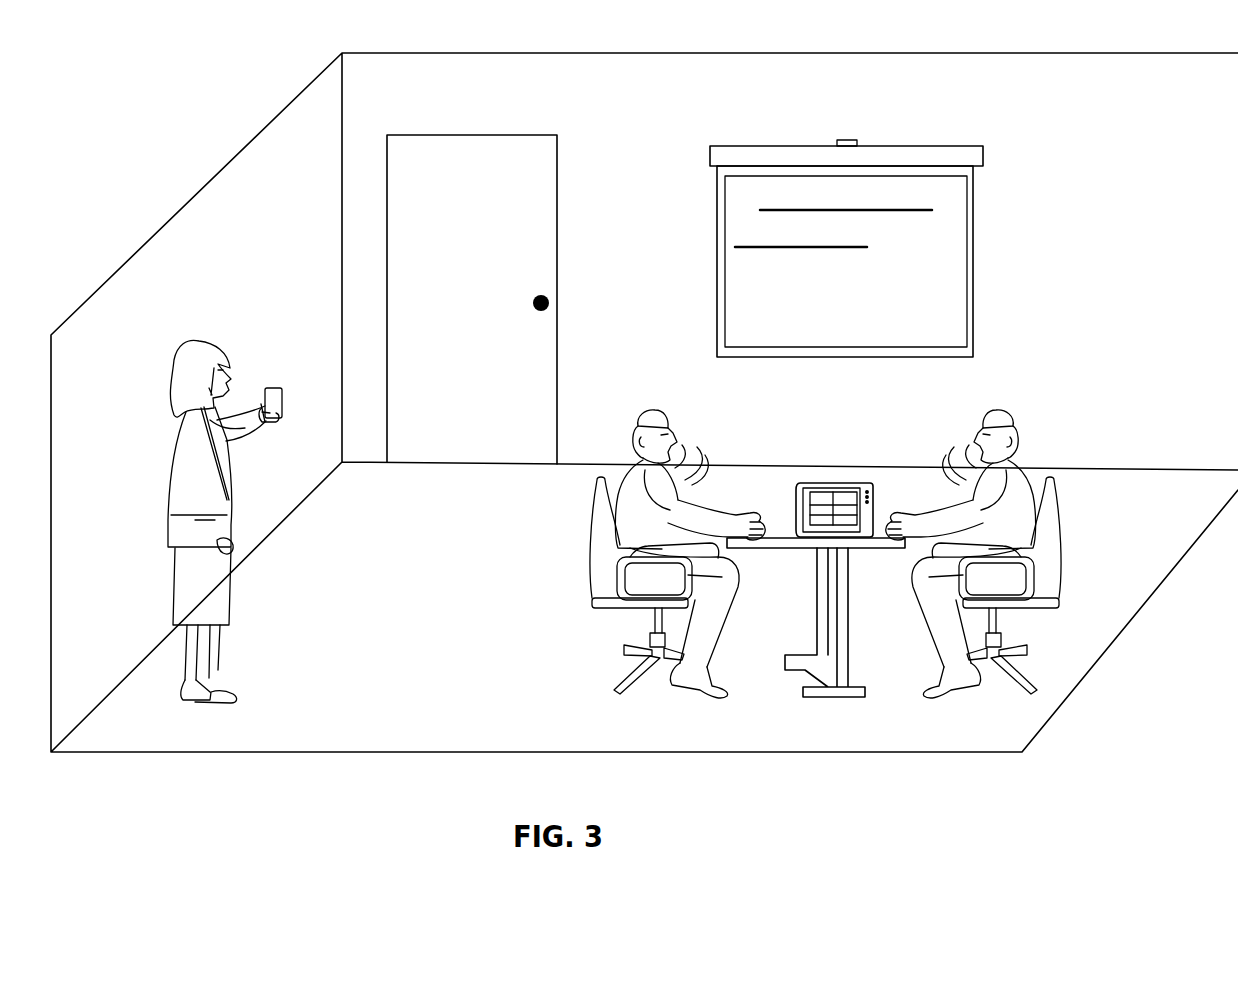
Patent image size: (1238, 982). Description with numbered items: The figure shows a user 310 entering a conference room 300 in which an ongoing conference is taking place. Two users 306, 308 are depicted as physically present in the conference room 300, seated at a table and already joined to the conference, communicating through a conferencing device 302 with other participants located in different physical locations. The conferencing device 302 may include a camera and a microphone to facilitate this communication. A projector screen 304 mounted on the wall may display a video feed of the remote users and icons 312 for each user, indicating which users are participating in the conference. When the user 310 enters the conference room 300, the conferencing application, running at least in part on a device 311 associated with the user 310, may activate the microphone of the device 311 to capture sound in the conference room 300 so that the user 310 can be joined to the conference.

The conference room 300 is at (138, 49).
The conferencing device 302 is at (833, 483).
The projector screen 304 is at (926, 150).
The user 306 is at (641, 407).
The user 308 is at (1010, 405).
The user 310 is at (191, 340).
The device 311 is at (281, 388).
The icons 312 is at (728, 268).